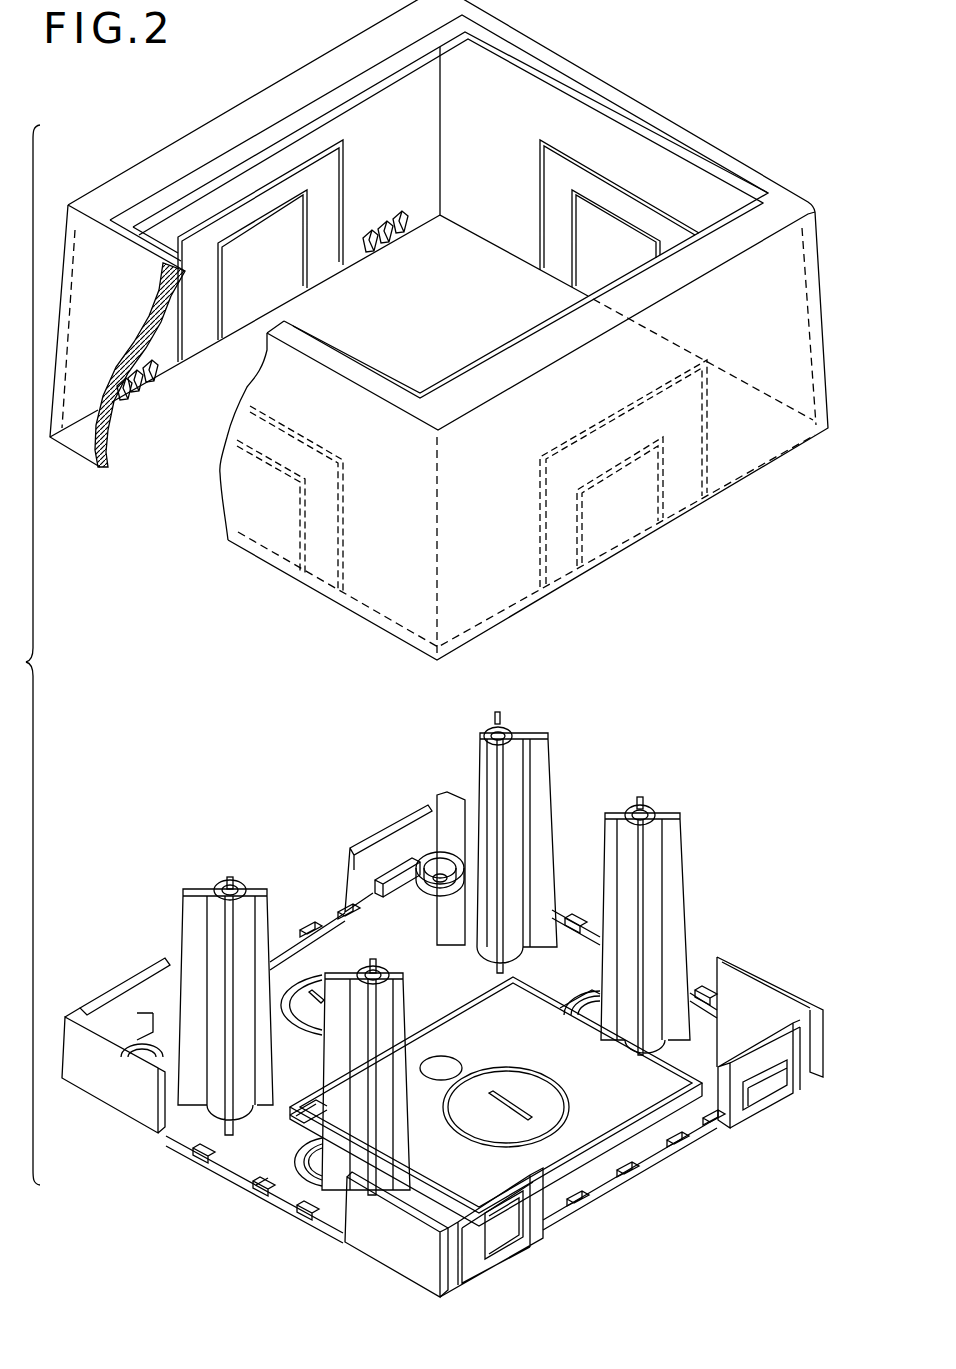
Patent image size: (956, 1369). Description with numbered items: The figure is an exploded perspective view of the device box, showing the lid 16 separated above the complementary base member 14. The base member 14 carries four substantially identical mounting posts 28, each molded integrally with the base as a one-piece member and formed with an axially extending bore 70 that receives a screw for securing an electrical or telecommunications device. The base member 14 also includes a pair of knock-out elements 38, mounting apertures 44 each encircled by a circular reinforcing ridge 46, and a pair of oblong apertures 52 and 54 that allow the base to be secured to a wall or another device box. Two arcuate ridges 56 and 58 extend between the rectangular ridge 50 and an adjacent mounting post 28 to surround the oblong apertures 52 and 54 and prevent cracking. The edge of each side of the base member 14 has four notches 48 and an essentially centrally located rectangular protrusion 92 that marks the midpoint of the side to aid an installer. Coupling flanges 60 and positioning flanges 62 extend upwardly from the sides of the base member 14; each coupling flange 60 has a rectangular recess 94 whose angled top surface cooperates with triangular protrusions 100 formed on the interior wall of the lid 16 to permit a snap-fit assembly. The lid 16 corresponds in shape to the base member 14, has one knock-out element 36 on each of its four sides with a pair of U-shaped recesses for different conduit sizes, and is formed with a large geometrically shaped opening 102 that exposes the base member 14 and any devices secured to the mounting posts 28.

The base member 14 is at (698, 948).
The lid 16 is at (272, 74).
The mounting post 28 is at (187, 910).
The knock-out element 36 is at (637, 223).
The knock-out element 38 is at (572, 1105).
The mounting aperture 44 is at (440, 882).
The circular reinforcing ridge 46 is at (153, 1017).
The notch 48 is at (177, 1013).
The rectangular ridge 50 is at (698, 1062).
The oblong aperture 52 is at (592, 1010).
The oblong aperture 54 is at (305, 1146).
The arcuate reinforcing ridge 56 is at (588, 990).
The arcuate reinforcing ridge 58 is at (268, 1182).
The coupling flange 60 is at (93, 997).
The positioning flange 62 is at (100, 1085).
The axially extending bore 70 is at (220, 887).
The rectangular protrusion 92 is at (285, 940).
The rectangular recess 94 is at (763, 1077).
The triangular protrusion 100 is at (376, 252).
The opening 102 is at (583, 115).